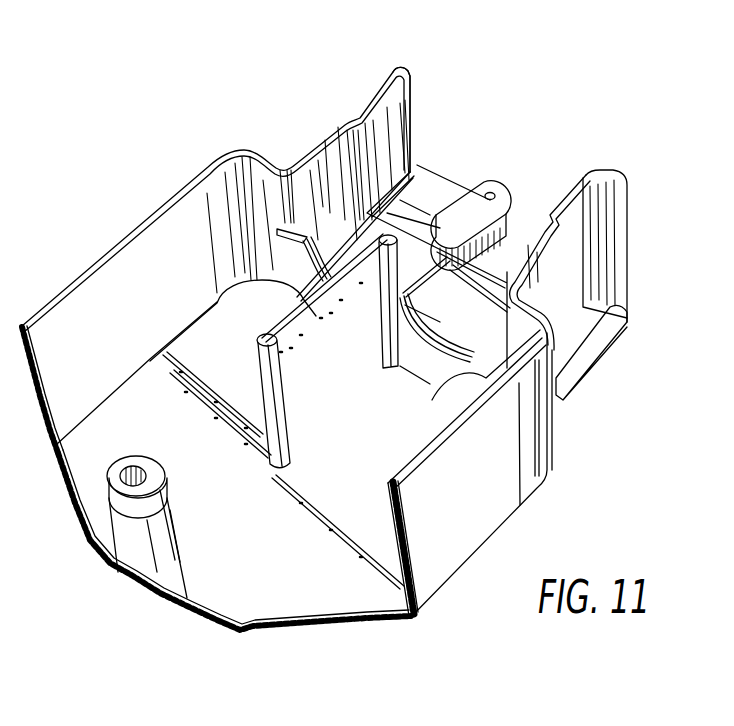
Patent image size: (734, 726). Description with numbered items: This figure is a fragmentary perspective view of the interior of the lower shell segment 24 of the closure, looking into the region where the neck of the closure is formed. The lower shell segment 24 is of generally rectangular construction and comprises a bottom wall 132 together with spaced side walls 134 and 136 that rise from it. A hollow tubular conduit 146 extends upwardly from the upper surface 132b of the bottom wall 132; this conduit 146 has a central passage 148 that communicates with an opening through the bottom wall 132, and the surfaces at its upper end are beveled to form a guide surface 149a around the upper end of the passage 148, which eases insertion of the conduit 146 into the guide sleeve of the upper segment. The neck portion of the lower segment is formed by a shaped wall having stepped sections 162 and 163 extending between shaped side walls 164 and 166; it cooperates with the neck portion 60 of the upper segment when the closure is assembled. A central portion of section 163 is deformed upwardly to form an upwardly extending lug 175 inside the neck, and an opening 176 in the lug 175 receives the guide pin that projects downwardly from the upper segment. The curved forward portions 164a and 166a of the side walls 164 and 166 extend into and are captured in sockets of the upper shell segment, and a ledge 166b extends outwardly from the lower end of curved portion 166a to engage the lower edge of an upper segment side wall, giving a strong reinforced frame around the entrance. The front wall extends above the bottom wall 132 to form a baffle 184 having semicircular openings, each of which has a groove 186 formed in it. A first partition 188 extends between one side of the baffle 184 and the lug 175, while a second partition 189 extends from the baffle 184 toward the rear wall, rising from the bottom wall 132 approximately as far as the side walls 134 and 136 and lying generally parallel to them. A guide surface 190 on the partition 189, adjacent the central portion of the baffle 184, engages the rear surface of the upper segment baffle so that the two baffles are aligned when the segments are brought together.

The lower shell segment 24 is at (180, 186).
The neck portion 60 is at (406, 54).
The bottom wall 132 is at (240, 631).
The upper surface 132b is at (387, 555).
The side wall 134 is at (118, 287).
The side wall 136 is at (484, 510).
The tubular conduit 146 is at (173, 561).
The central passage 148 is at (146, 472).
The guide surface 149a is at (165, 491).
The stepped top section 162 is at (347, 250).
The stepped top section 163 is at (421, 193).
The side wall 164 is at (316, 157).
The curved forward portion 164a is at (396, 77).
The side wall 166 is at (575, 201).
The curved forward portion 166a is at (615, 250).
The ledge 166b is at (577, 350).
The lug 175 is at (464, 213).
The opening 176 is at (493, 197).
The baffle 184 is at (300, 278).
The groove 186 is at (428, 380).
The first partition 188 is at (428, 297).
The second partition 189 is at (313, 403).
The guide surface 190 is at (388, 300).